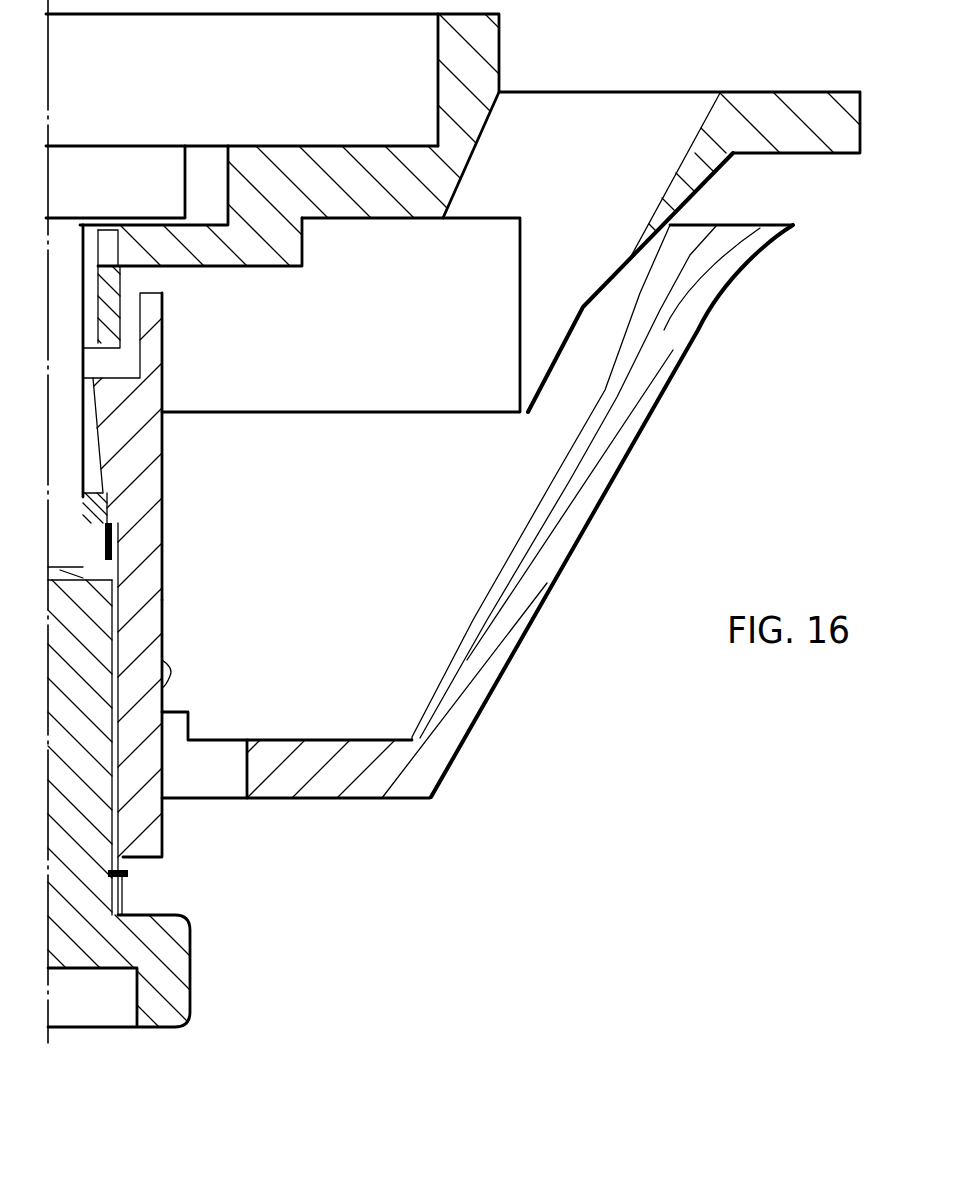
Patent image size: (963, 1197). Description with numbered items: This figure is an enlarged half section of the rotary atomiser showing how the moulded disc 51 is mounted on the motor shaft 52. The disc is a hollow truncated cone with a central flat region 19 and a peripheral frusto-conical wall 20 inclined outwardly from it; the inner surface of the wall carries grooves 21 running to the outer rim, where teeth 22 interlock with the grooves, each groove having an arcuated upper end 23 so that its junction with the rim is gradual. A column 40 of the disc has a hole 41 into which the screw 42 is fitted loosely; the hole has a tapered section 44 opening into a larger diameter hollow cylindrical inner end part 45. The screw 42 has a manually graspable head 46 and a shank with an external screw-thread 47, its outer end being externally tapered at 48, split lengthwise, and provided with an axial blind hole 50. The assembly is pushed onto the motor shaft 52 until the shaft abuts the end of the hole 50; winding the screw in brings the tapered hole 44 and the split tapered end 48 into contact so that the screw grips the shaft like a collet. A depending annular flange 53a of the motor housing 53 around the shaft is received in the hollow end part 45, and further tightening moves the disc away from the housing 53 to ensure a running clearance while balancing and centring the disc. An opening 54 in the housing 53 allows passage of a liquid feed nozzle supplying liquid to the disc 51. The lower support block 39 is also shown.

The central flat region 19 is at (390, 772).
The peripheral frusto-conical wall 20 is at (546, 587).
The grooves 21 is at (573, 475).
The teeth 22 is at (793, 227).
The arcuated groove end 23 is at (732, 255).
The lower support block 39 is at (240, 790).
The column 40 is at (163, 825).
The hole 41 is at (120, 652).
The screw 42 is at (128, 874).
The tapered hole 44 is at (96, 480).
The hollow cylindrical inner end part 45 is at (125, 355).
The manually graspable head 46 is at (165, 982).
The external screw-thread 47 is at (118, 897).
The tapered outer end 48 is at (105, 428).
The axial blind hole 50 is at (64, 567).
The moulded disc 51 is at (488, 706).
The motor shaft 52 is at (67, 263).
The motor housing 53 is at (370, 193).
The depending annular flange 53a is at (110, 312).
The opening 54 is at (487, 136).